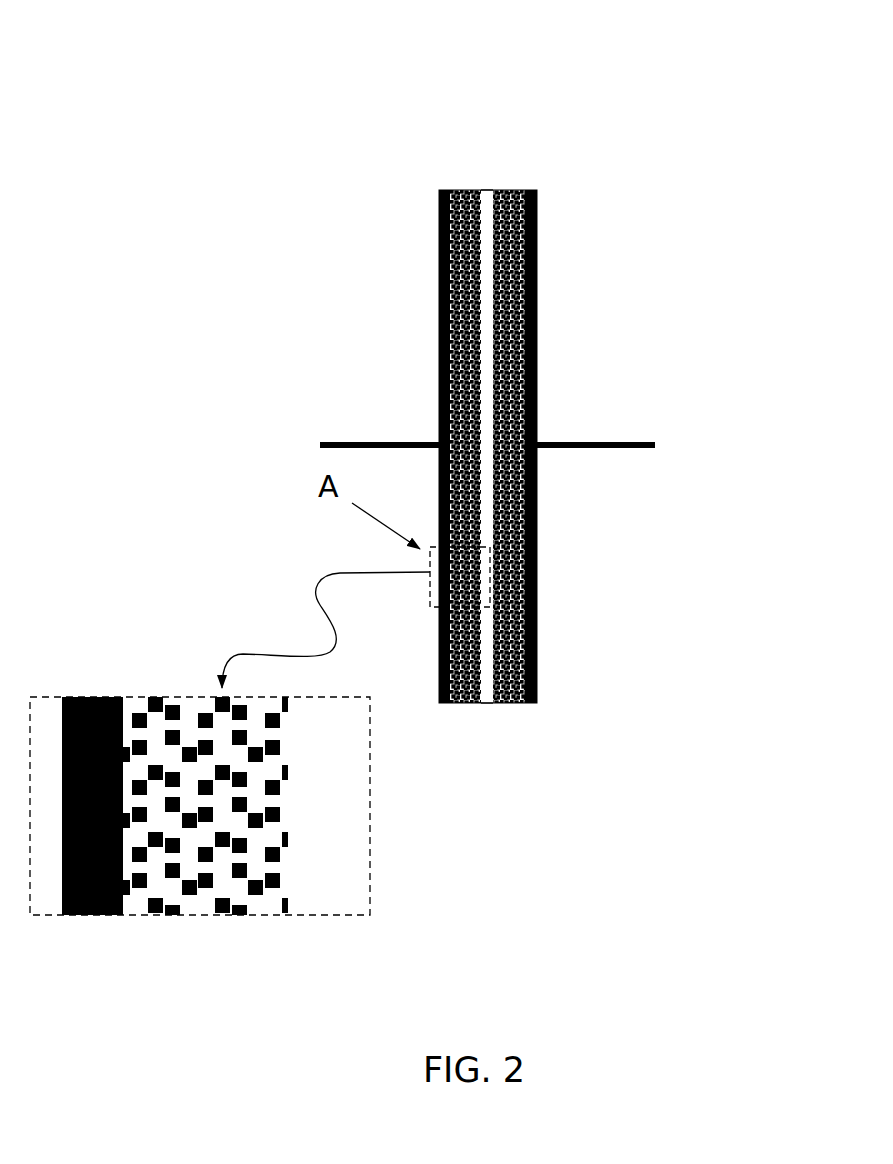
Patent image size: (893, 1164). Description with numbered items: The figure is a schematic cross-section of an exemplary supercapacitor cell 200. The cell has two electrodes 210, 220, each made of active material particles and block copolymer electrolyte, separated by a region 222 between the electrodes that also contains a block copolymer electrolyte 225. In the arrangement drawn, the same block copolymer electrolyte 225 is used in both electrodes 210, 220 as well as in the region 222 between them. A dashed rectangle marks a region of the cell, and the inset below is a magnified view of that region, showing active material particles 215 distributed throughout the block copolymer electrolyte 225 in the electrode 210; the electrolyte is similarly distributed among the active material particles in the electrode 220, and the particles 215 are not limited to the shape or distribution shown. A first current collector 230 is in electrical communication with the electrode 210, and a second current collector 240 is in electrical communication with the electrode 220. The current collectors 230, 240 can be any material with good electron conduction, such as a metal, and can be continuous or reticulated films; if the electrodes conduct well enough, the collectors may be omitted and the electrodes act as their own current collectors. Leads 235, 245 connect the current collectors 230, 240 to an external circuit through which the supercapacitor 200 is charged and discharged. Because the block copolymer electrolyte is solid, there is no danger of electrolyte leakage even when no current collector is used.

The supercapacitor cell 200 is at (215, 135).
The electrode 210 is at (447, 190).
The active material particles 215 is at (148, 882).
The electrode 220 is at (523, 190).
The region between the electrodes 222 is at (487, 185).
The block copolymer electrolyte 225 is at (318, 855).
The first current collector 230 is at (439, 332).
The lead 235 is at (352, 442).
The second current collector 240 is at (536, 368).
The lead 245 is at (630, 449).